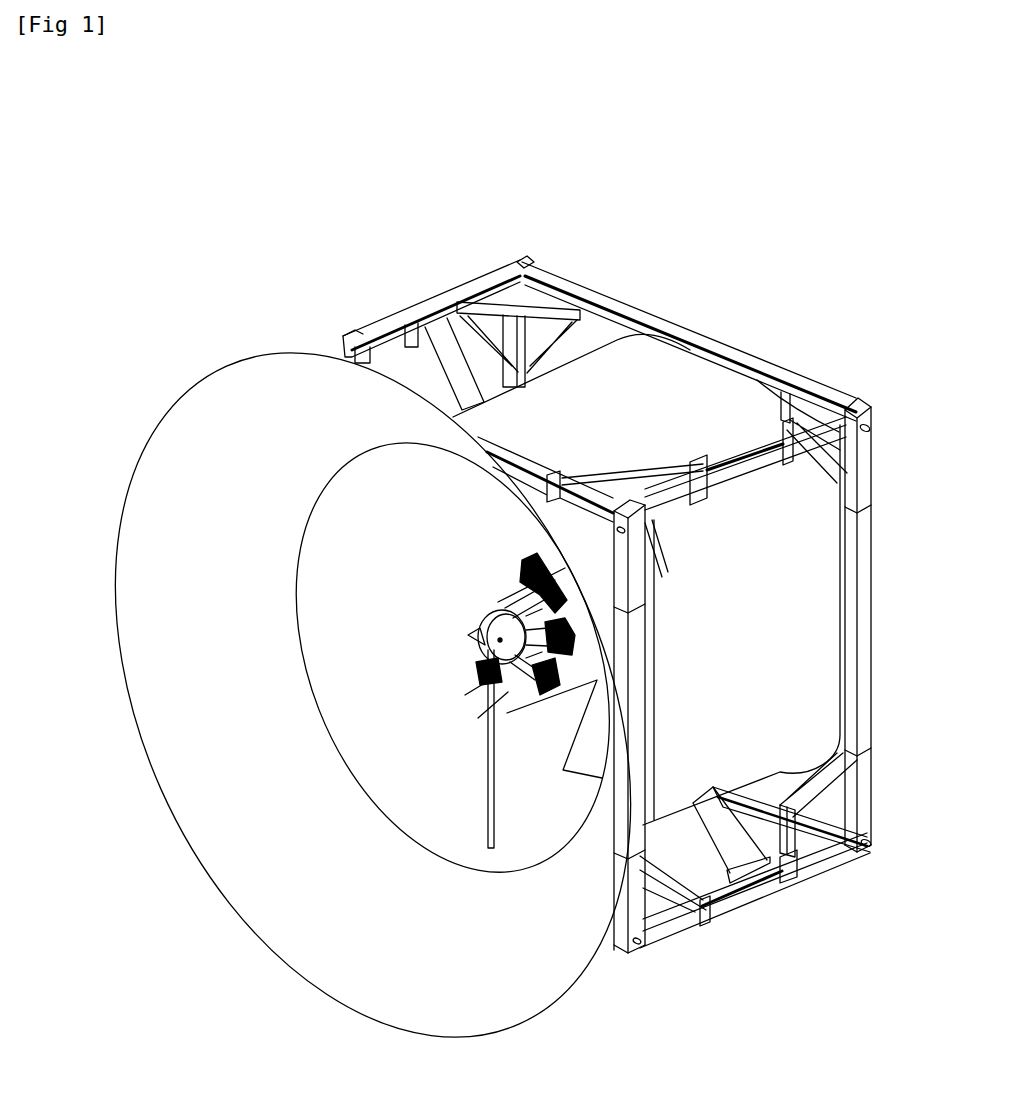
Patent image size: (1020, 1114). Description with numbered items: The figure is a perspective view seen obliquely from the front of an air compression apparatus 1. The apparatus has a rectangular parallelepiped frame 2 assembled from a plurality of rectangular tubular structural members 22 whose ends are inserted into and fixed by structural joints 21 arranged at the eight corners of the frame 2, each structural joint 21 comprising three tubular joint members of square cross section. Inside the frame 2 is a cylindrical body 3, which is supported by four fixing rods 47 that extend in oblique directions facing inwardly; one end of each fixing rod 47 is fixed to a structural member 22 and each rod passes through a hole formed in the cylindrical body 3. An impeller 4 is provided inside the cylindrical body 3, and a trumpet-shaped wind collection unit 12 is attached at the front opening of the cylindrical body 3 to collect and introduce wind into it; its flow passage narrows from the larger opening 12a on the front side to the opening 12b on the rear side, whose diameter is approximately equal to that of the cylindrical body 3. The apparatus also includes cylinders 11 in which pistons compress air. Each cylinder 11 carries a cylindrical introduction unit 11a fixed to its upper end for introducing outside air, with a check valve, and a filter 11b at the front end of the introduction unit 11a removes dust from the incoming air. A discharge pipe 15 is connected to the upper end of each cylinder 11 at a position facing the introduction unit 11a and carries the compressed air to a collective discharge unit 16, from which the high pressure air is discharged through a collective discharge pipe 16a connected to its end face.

The air compression apparatus 1 is at (559, 232).
The frame 2 is at (684, 322).
The cylindrical body 3 is at (800, 588).
The impeller 4 is at (498, 607).
The cylinder 11 is at (522, 560).
The introduction unit 11a is at (577, 653).
The filter 11b is at (560, 683).
The wind collection unit 12 is at (150, 432).
The opening on the front side 12a is at (118, 515).
The opening on the rear side 12b is at (295, 643).
The discharge pipe 15 is at (532, 622).
The collective discharge unit 16 is at (488, 625).
The collective discharge pipe 16a is at (488, 743).
The structural joint 21 is at (487, 280).
The structural member 22 is at (741, 350).
The fixing rod 47 is at (420, 327).